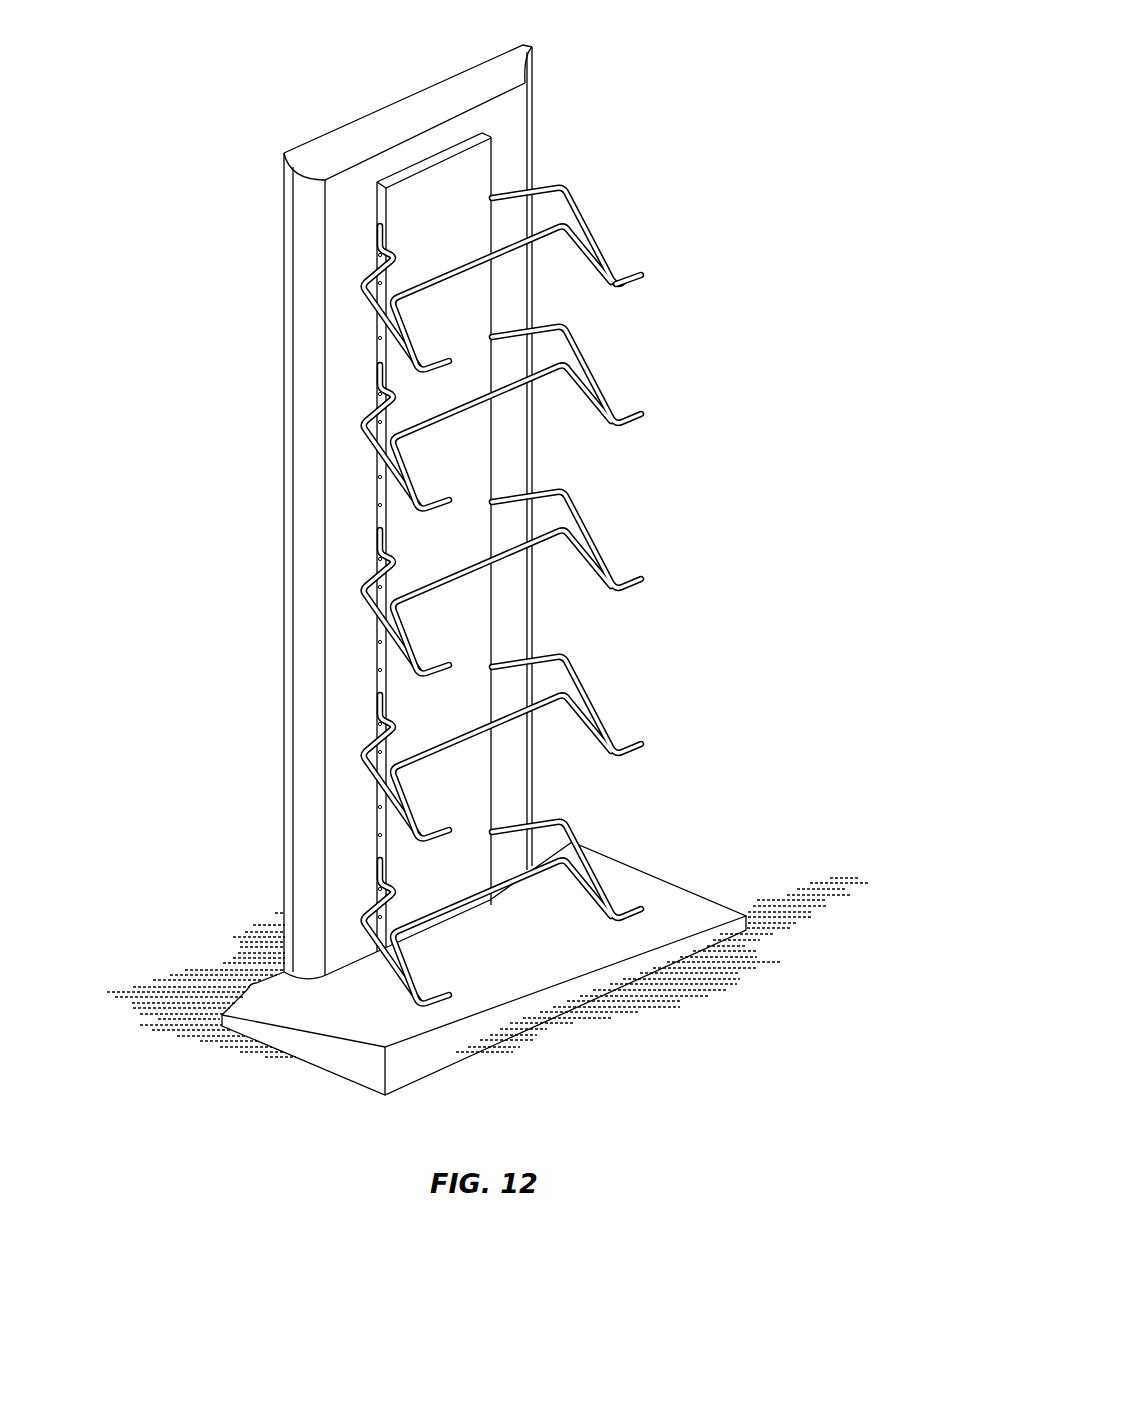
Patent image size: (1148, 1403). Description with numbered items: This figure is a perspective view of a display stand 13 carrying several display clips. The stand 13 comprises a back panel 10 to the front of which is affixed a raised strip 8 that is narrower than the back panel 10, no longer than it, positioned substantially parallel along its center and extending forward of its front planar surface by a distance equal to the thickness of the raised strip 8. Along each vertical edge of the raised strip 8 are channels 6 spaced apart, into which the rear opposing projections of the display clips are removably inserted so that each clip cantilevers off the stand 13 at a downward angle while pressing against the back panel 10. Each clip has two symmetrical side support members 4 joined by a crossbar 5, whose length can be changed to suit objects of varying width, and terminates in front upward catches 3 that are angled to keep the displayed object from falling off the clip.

The stand 13 is at (286, 82).
The back panel 10 is at (508, 117).
The raised strip 8 is at (470, 436).
The channels 6 is at (380, 505).
The side support members 4 is at (572, 193).
The front upward catches 3 is at (645, 275).
The crossbar 5 is at (470, 740).